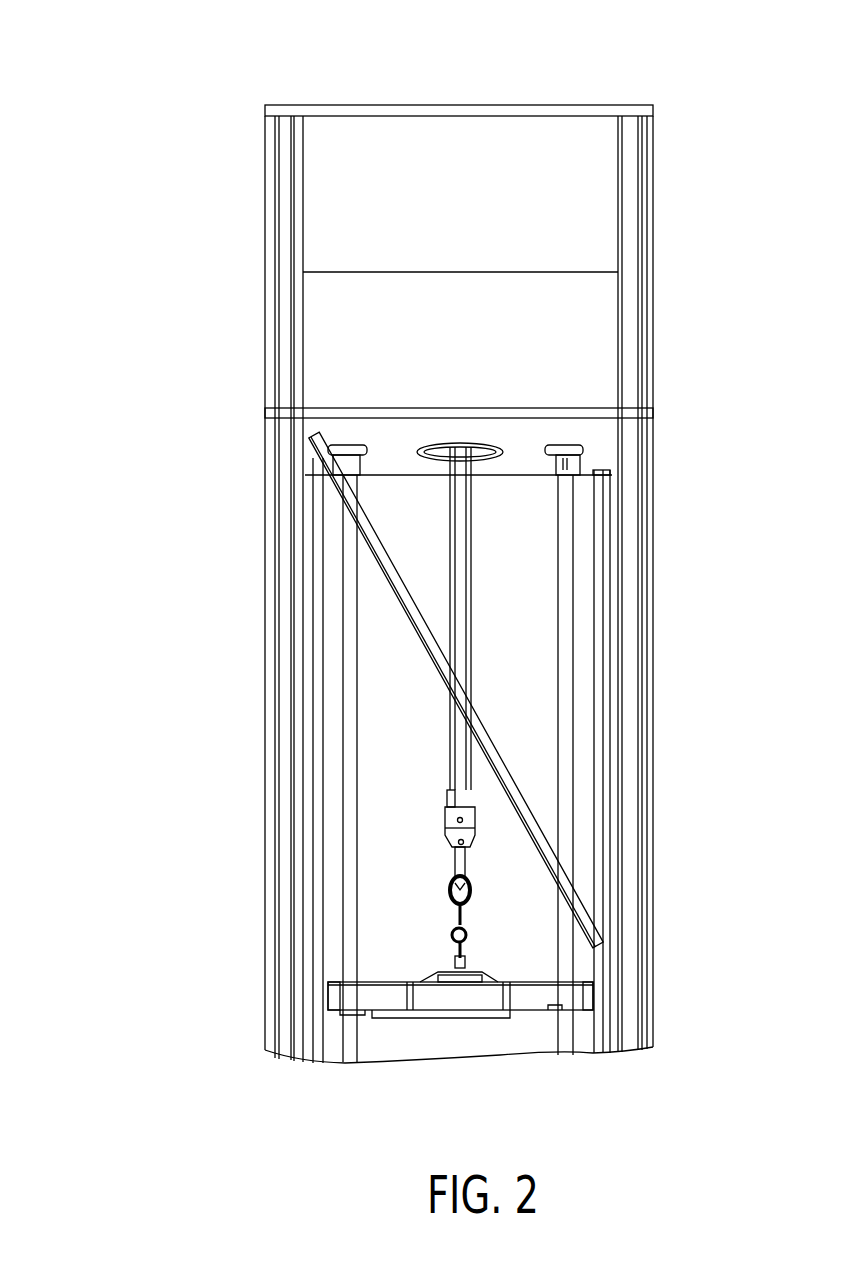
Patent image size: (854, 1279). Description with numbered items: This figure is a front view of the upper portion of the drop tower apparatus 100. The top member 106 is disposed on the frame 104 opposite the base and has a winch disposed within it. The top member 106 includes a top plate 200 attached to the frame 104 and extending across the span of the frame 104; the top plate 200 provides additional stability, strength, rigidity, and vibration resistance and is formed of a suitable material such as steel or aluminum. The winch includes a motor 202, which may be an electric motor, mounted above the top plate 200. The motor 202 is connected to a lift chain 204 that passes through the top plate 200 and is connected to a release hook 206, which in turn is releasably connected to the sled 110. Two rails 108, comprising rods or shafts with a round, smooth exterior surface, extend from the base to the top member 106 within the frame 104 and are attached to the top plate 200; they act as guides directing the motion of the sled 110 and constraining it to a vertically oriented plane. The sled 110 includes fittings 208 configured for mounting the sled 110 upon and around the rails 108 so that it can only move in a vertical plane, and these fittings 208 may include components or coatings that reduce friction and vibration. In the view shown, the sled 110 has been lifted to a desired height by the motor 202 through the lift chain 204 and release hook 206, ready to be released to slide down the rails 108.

The drop tower apparatus 100 is at (137, 90).
The frame 104 is at (276, 726).
The top member 106 is at (457, 101).
The rails 108 is at (347, 818).
The sled 110 is at (481, 1003).
The top plate 200 is at (409, 437).
The motor 202 is at (342, 323).
The lift chain 204 is at (477, 578).
The release hook 206 is at (474, 811).
The fittings 208 is at (344, 978).